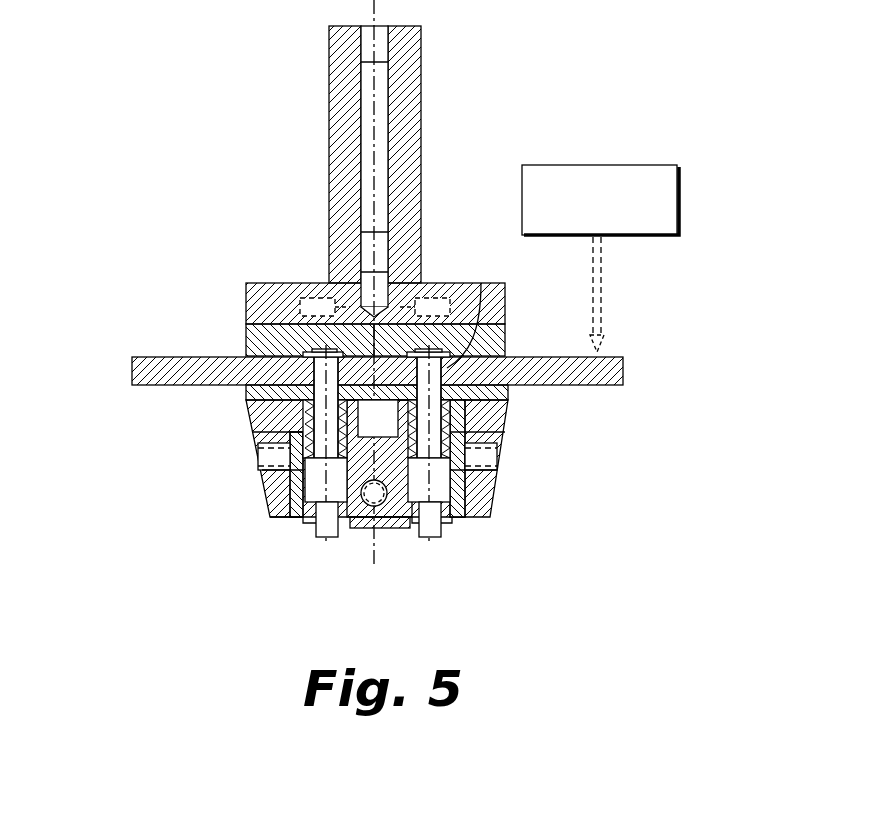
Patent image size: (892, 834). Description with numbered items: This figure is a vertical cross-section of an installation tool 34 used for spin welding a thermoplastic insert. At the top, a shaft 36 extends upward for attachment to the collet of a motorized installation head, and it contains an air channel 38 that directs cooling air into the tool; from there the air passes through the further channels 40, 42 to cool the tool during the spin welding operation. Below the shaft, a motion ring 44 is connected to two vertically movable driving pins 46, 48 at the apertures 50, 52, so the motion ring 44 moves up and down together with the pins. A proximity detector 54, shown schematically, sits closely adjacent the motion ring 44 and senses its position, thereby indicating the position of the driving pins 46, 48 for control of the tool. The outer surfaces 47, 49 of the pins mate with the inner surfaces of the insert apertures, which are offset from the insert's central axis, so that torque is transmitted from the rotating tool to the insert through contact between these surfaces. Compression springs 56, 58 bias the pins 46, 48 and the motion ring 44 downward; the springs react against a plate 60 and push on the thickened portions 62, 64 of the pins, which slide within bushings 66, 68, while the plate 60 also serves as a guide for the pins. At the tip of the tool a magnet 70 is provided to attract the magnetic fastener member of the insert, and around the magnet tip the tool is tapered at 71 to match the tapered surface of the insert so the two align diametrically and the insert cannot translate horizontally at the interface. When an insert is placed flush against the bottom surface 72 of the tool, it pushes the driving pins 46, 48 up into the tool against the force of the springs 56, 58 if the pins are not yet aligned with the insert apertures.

The installation tool 34 is at (172, 300).
The shaft 36 is at (329, 130).
The air channel 38 is at (388, 62).
The further channel 40 is at (332, 252).
The further channel 42 is at (246, 283).
The motion ring 44 is at (618, 357).
The driving pin 46 is at (303, 523).
The outer surface 47 is at (312, 533).
The driving pin 48 is at (447, 525).
The outer surface 49 is at (453, 523).
The aperture 50 is at (315, 368).
The aperture 52 is at (481, 283).
The proximity detector 54 is at (677, 212).
The compression spring 56 is at (290, 432).
The compression spring 58 is at (475, 443).
The plate 60 is at (513, 392).
The thickened portion 62 is at (305, 466).
The thickened portion 64 is at (445, 475).
The bushing 66 is at (298, 490).
The bushing 68 is at (472, 497).
The magnet 70 is at (352, 540).
The tapered portion 71 is at (423, 537).
The bottom surface 72 is at (277, 520).